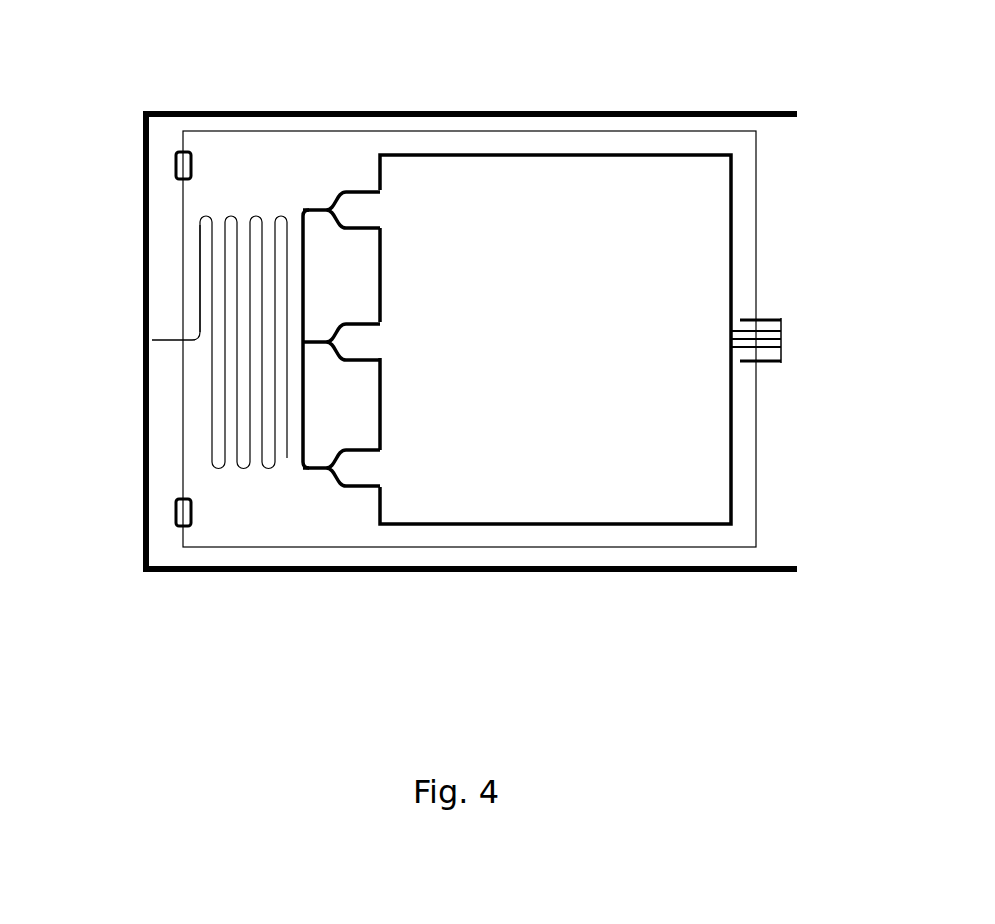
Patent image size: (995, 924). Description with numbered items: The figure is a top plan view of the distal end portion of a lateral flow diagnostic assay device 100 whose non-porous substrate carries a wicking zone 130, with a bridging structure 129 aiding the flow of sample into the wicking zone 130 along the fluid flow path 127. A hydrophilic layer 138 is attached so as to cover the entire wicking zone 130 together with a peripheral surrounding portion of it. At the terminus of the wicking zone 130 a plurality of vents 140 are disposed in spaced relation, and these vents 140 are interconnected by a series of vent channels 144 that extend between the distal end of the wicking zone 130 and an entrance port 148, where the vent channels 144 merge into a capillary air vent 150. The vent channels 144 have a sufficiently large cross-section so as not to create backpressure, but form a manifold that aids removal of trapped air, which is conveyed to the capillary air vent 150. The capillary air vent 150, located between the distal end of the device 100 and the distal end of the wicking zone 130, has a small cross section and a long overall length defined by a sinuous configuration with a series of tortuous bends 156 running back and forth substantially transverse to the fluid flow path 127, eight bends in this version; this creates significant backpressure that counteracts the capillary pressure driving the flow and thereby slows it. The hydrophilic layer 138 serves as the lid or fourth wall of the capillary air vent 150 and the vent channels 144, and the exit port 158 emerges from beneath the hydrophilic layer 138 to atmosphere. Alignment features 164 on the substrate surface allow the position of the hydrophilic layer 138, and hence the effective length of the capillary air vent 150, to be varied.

The lateral flow diagnostic assay device 100 is at (440, 110).
The fluid flow path 127 is at (812, 327).
The bridging structure 129 is at (782, 344).
The wicking zone 130 is at (523, 247).
The hydrophilic layer 138 is at (757, 224).
The vents 140 is at (349, 190).
The vent channels 144 is at (307, 410).
The entrance port 148 is at (296, 340).
The capillary air vent 150 is at (250, 474).
The bends 156 is at (208, 432).
The exit port 158 is at (168, 338).
The alignment features 164 is at (176, 518).